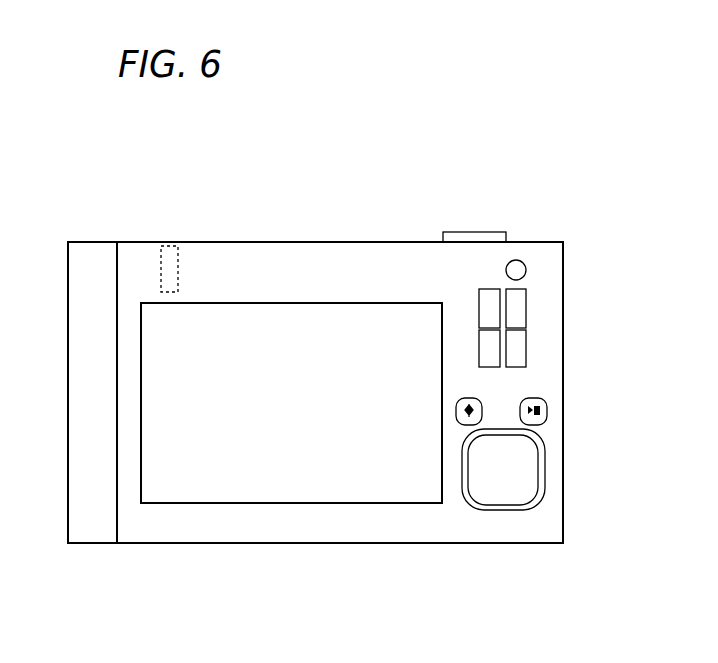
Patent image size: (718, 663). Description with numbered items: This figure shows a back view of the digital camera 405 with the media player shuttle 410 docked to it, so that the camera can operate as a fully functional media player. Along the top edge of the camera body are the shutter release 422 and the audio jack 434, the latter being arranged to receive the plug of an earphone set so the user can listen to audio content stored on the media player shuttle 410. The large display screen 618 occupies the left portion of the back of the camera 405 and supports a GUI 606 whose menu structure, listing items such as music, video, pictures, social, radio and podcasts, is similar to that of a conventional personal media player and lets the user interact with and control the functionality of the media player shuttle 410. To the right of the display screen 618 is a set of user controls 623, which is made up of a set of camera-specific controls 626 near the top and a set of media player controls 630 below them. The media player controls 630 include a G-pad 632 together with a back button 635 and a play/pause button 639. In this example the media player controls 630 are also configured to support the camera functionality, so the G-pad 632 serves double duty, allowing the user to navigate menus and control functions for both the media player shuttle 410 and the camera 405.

The digital camera 405 is at (243, 242).
The media player shuttle 410 is at (93, 242).
The audio jack 434 is at (170, 250).
The shutter release 422 is at (476, 232).
The display screen 618 is at (367, 467).
The GUI 606 is at (311, 330).
The user controls 623 is at (569, 420).
The camera-specific controls 626 is at (531, 255).
The back button 635 is at (482, 403).
The play/pause button 639 is at (547, 410).
The G-pad 632 is at (515, 467).
The media player controls 630 is at (500, 546).